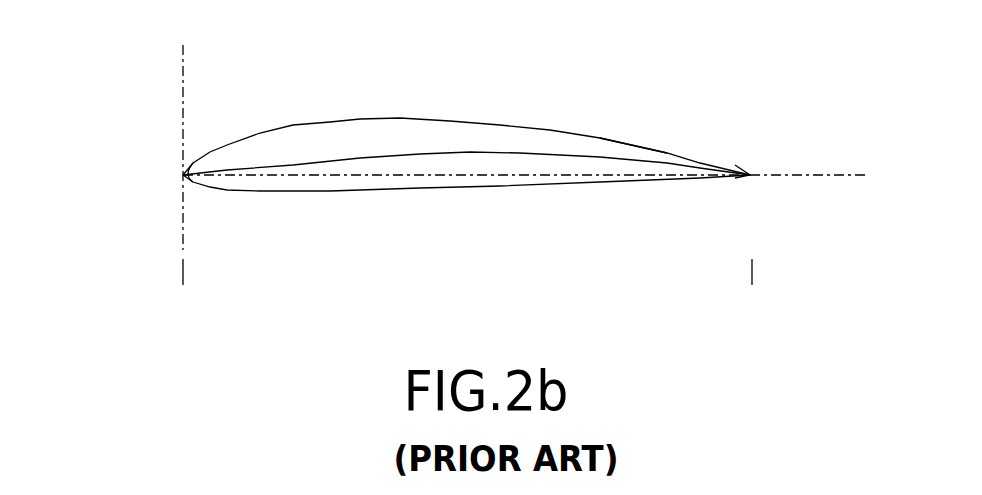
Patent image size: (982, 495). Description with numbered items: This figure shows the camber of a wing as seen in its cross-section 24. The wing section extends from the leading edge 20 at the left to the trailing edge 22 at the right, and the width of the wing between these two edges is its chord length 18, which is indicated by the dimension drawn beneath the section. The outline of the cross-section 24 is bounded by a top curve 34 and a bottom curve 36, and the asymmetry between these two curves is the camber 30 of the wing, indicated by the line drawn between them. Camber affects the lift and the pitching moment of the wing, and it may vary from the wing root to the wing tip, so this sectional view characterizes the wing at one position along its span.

The chord length 18 is at (183, 272).
The leading edge 20 is at (182, 169).
The trailing edge 22 is at (753, 170).
The cross-section 24 is at (639, 121).
The camber 30 is at (475, 146).
The top curve 34 is at (412, 118).
The bottom curve 36 is at (293, 191).